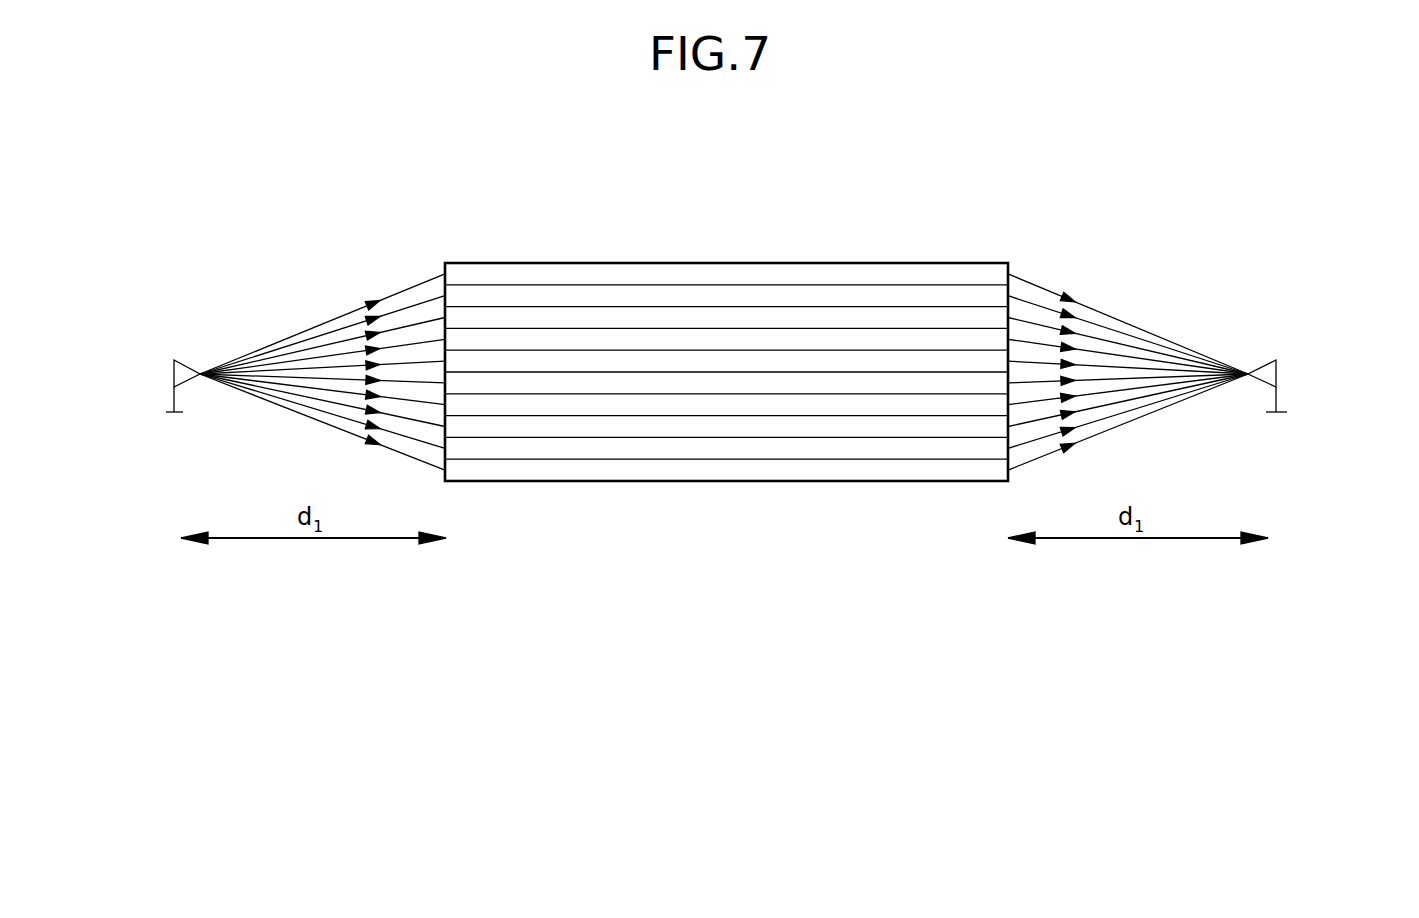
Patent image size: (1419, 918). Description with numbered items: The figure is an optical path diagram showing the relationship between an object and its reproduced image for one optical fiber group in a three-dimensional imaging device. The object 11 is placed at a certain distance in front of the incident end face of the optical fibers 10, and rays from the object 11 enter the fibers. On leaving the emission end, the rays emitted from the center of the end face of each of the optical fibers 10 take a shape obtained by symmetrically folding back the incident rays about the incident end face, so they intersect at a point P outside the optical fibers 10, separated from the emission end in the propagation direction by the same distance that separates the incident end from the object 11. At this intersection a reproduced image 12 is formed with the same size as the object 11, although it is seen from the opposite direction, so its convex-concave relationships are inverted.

The optical fibers 10 is at (645, 262).
The object 11 is at (180, 358).
The reproduced image 12 is at (1266, 359).